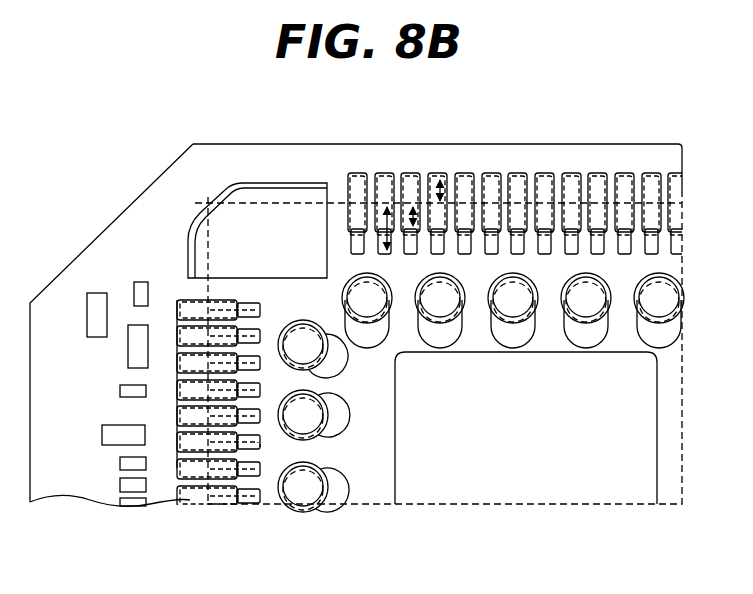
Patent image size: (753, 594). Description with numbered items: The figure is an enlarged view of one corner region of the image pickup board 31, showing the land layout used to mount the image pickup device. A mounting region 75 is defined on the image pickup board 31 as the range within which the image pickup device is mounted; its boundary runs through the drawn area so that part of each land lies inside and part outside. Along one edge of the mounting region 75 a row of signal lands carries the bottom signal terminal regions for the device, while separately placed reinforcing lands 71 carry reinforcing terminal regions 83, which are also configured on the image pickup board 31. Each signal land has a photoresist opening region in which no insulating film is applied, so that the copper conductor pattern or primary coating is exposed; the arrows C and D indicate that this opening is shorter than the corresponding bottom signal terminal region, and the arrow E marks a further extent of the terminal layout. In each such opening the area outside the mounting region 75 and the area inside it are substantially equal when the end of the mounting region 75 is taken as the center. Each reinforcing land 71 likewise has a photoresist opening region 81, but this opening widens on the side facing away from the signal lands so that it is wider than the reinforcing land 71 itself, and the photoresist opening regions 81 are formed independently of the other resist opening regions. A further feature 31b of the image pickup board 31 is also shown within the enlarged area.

The image pickup board 31 is at (110, 258).
The recess of circuit board 31b is at (396, 473).
The reinforcing land 71 is at (328, 480).
The mounting region 75 is at (188, 233).
The photoresist opening region 81 is at (347, 428).
The reinforcing terminal region 83 is at (655, 325).
The arrow C is at (385, 225).
The arrow D is at (417, 218).
The dimension E is at (443, 190).